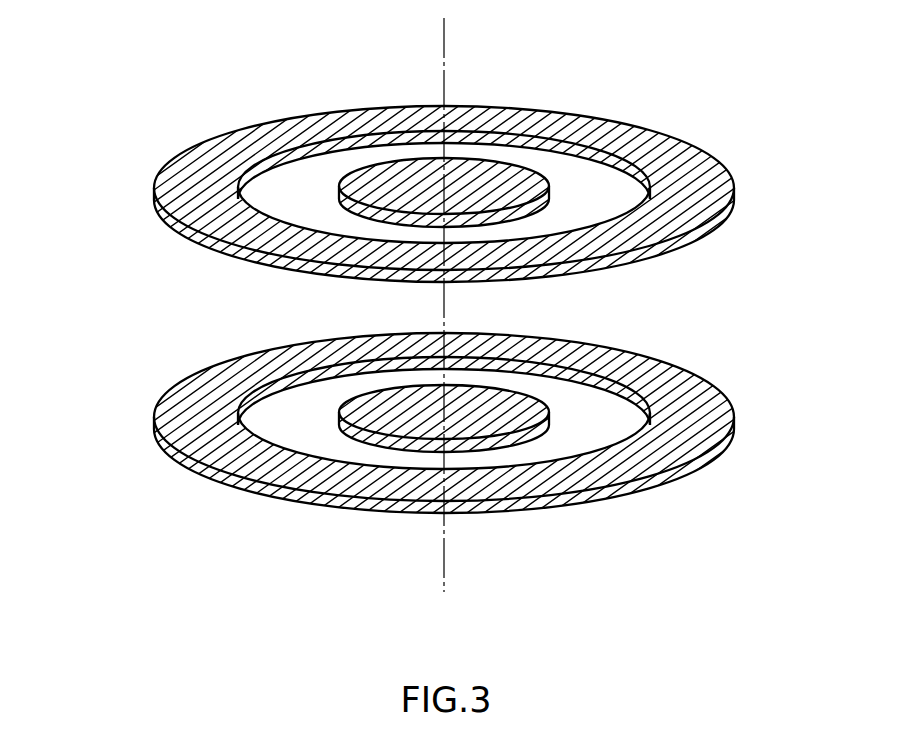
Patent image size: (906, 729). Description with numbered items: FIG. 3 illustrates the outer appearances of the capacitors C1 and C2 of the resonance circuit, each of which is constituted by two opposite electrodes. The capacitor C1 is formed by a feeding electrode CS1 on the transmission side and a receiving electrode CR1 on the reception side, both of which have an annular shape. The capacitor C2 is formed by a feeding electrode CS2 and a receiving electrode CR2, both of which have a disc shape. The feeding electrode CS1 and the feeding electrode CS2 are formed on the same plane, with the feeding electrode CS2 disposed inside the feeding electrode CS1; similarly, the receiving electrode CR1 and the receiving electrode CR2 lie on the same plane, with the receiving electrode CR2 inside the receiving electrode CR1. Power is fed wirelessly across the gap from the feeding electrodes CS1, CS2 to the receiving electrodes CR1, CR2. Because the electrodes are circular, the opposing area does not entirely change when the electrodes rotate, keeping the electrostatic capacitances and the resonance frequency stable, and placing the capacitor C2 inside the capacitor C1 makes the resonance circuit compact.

The capacitor C1 is at (453, 310).
The feeding electrode CS1 is at (732, 198).
The receiving electrode CR1 is at (822, 207).
The capacitor C2 is at (453, 310).
The feeding electrode CS2 is at (337, 197).
The receiving electrode CR2 is at (338, 427).